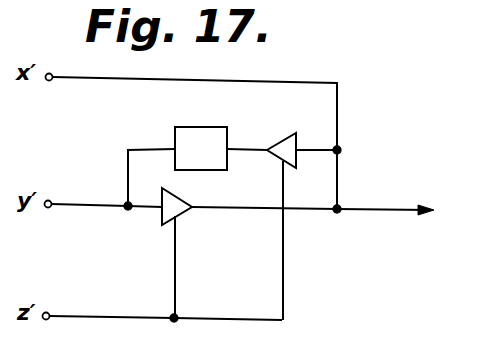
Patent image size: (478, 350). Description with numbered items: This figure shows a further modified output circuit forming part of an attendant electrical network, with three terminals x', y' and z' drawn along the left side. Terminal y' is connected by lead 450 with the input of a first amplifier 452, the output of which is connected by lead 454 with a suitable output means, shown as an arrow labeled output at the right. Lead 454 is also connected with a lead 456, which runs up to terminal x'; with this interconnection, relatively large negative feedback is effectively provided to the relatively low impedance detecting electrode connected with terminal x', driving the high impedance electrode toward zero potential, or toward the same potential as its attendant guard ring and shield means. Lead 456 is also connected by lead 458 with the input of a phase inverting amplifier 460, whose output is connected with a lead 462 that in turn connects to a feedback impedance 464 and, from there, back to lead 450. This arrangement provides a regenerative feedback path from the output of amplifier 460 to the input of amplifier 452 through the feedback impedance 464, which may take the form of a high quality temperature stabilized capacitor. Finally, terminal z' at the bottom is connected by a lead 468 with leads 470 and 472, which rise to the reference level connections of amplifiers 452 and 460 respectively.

The lead 450 is at (85, 206).
The first amplifier 452 is at (190, 211).
The lead 454 is at (262, 207).
The lead 456 is at (334, 181).
The lead 458 is at (324, 147).
The phase inverting amplifier 460 is at (281, 160).
The lead 462 is at (247, 142).
The feedback impedance 464 is at (213, 133).
The lead 468 is at (95, 316).
The lead 470 is at (176, 286).
The lead 472 is at (284, 288).